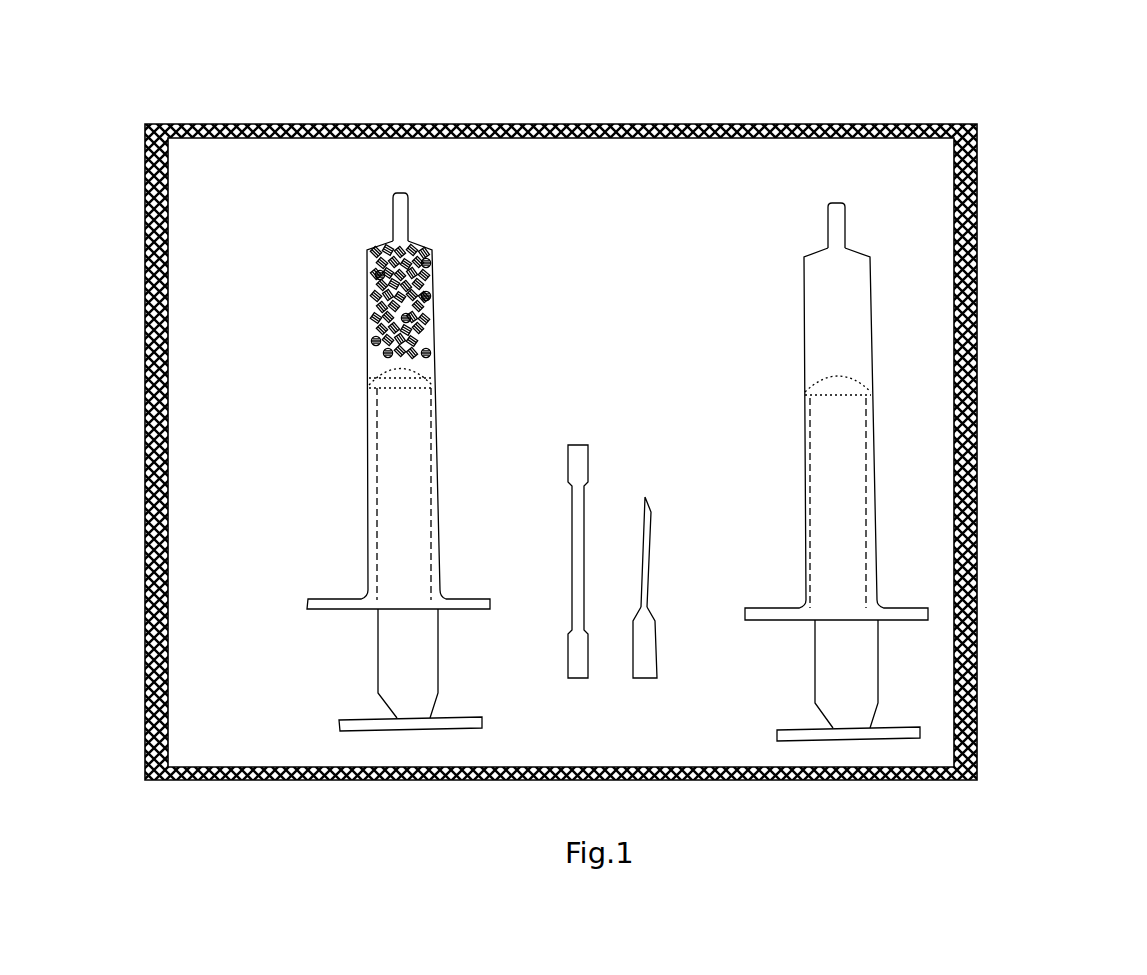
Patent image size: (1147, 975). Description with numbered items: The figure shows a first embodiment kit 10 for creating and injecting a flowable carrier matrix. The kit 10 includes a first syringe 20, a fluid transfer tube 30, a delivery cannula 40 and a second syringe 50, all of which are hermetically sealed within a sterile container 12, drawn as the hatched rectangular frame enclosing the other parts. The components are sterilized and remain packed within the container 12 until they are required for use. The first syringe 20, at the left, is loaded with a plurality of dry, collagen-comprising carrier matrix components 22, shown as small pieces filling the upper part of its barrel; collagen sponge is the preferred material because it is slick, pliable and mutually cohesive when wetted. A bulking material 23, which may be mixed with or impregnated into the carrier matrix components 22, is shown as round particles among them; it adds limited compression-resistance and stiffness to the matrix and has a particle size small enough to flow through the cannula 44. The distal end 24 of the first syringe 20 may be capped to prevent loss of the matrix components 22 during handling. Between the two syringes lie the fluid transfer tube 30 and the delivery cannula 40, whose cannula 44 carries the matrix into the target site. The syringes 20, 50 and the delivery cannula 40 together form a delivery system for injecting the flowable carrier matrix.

The kit 10 is at (1046, 120).
The sterile container 12 is at (977, 430).
The first syringe 20 is at (382, 460).
The carrier matrix components 22 is at (430, 300).
The bulking material 23 is at (410, 318).
The distal end 24 is at (422, 203).
The fluid transfer tube 30 is at (558, 522).
The delivery cannula 40 is at (700, 537).
The cannula 44 is at (647, 553).
The second syringe 50 is at (786, 362).